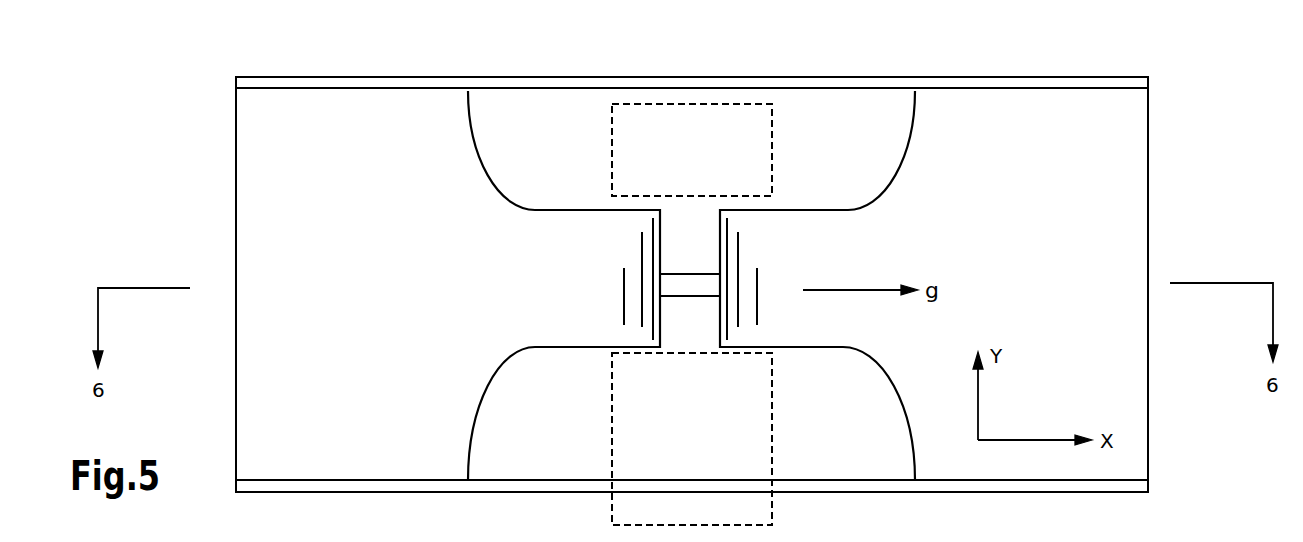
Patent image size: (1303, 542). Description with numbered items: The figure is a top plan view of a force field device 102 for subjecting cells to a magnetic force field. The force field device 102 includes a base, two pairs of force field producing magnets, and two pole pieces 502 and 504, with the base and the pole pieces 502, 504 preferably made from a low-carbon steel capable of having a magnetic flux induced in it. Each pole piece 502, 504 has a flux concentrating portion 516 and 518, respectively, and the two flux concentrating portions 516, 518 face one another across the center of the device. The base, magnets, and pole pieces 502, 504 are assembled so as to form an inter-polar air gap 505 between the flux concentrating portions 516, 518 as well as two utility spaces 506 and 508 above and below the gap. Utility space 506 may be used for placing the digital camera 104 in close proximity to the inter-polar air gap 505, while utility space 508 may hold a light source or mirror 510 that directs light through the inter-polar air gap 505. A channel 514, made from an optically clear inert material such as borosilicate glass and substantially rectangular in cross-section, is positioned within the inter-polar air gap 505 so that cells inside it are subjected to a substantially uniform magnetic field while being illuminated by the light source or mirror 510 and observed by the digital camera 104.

The force field device 102 is at (1186, 128).
The digital camera 104 is at (612, 447).
The pole piece 502 is at (310, 198).
The pole piece 504 is at (1080, 198).
The inter-polar air gap 505 is at (713, 244).
The utility space 506 is at (865, 416).
The utility space 508 is at (863, 157).
The light source or mirror 510 is at (612, 148).
The channel 514 is at (680, 285).
The flux concentrating portion 516 is at (567, 358).
The flux concentrating portion 518 is at (790, 358).